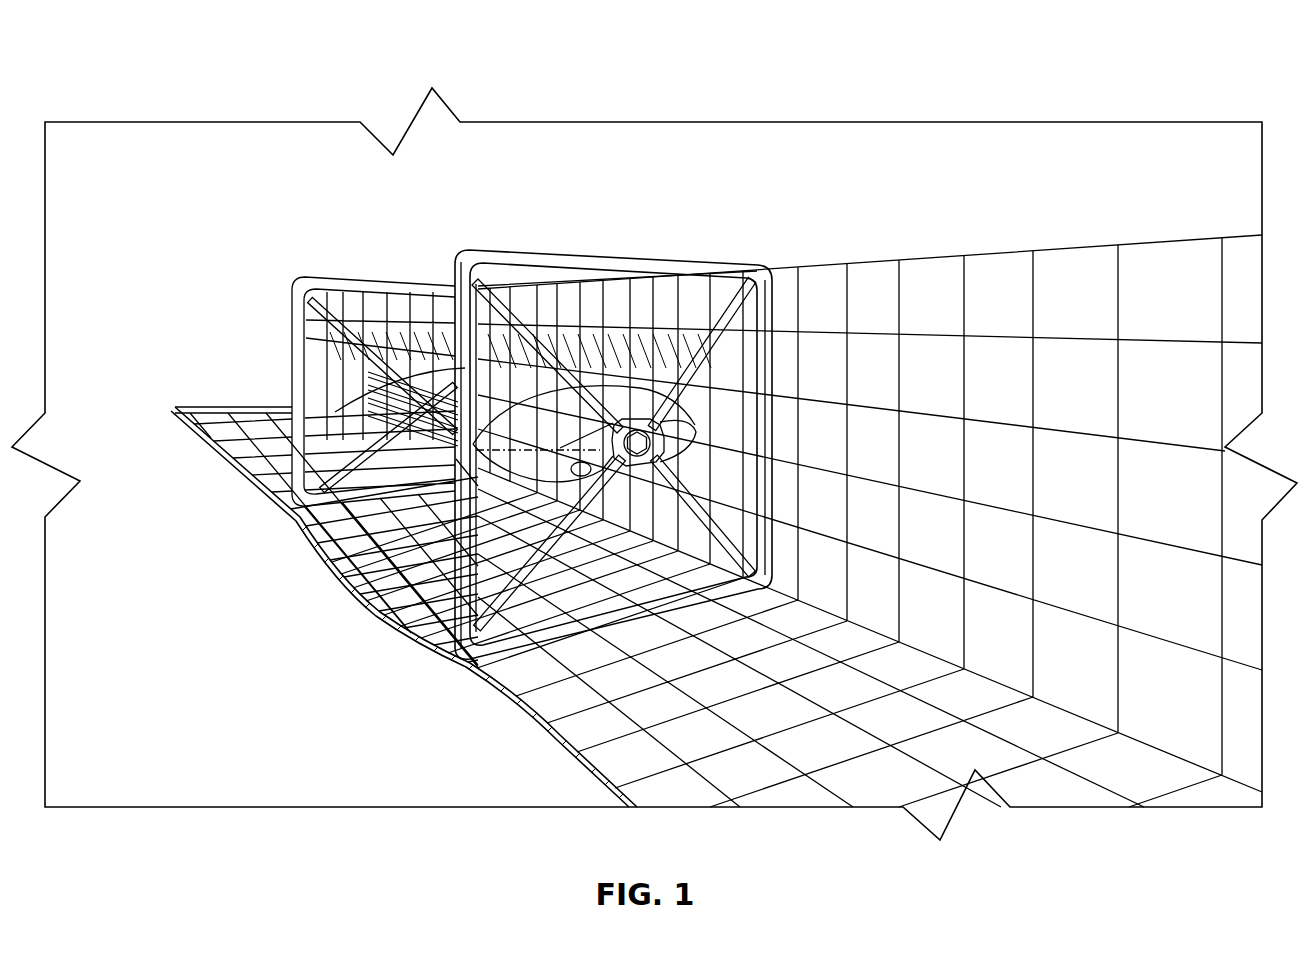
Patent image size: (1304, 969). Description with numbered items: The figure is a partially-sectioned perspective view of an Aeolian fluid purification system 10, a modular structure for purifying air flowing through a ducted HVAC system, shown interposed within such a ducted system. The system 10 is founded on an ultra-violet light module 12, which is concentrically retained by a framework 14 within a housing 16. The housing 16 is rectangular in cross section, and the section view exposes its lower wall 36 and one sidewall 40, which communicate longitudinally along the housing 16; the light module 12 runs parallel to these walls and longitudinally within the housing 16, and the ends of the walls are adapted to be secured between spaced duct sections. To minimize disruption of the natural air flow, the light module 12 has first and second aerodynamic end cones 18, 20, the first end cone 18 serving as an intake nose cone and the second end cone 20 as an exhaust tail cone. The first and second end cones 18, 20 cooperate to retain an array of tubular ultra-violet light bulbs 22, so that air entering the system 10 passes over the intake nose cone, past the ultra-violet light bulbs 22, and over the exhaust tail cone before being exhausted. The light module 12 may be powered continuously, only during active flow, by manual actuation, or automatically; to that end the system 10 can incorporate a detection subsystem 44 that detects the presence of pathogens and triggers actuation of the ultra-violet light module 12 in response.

The Aeolian fluid purification system 10 is at (876, 92).
The ultra-violet light module 12 is at (620, 490).
The framework 14 is at (455, 262).
The housing 16 is at (390, 553).
The first aerodynamic end cone 18 is at (533, 463).
The second aerodynamic end cone 20 is at (320, 298).
The tubular ultra-violet light bulbs 22 is at (330, 405).
The lower wall 36 is at (400, 594).
The sidewall 40 is at (738, 363).
The detection subsystem 44 is at (581, 478).